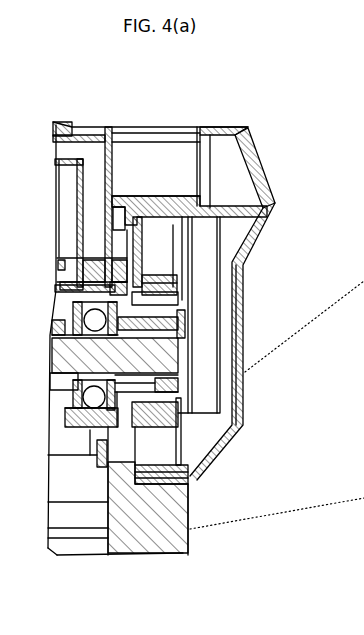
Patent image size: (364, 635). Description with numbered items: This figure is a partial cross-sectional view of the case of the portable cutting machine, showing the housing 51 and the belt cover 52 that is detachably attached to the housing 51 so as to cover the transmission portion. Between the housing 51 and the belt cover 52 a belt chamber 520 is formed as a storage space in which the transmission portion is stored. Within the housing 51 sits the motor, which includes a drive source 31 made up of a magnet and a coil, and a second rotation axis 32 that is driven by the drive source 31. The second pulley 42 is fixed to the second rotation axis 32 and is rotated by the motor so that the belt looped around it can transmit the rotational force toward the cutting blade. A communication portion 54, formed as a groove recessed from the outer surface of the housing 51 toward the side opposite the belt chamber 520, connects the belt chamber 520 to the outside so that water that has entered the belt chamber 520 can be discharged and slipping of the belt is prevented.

The belt cover 52 is at (270, 205).
The belt chamber 520 is at (234, 173).
The second pulley 42 is at (182, 298).
The second rotation axis 32 is at (62, 352).
The drive source 31 is at (52, 398).
The communication portion 54 is at (185, 497).
The housing 51 is at (150, 557).